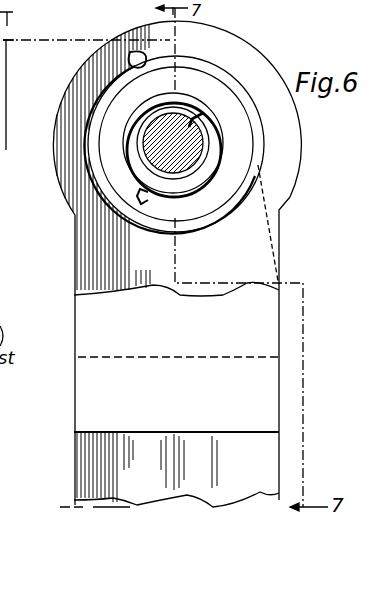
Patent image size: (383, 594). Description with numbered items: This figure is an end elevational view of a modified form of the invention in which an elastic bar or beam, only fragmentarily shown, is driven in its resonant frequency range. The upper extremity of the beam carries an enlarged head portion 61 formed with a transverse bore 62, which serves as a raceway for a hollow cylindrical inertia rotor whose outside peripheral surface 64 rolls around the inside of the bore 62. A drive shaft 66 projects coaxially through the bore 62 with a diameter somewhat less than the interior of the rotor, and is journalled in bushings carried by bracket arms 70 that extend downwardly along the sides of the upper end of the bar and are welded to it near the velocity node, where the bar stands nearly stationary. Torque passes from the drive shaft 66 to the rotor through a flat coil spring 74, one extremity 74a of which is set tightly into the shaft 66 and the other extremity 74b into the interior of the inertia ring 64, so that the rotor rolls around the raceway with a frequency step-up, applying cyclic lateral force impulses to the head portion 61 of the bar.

The enlarged head portion 61 is at (249, 51).
The transverse bore 62 is at (140, 62).
The outside peripheral surface of inertia rotor 64 is at (245, 157).
The drive shaft 66 is at (140, 125).
The bracket arms 70 is at (260, 320).
The flat coil spring 74 is at (139, 177).
The spring extremity 74a is at (188, 117).
The spring extremity 74b is at (143, 203).